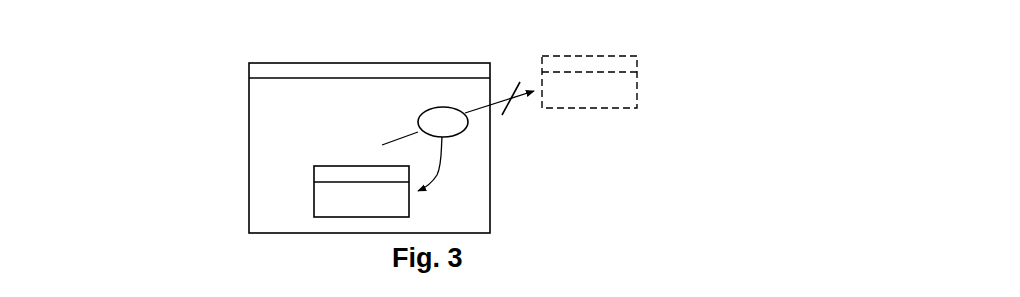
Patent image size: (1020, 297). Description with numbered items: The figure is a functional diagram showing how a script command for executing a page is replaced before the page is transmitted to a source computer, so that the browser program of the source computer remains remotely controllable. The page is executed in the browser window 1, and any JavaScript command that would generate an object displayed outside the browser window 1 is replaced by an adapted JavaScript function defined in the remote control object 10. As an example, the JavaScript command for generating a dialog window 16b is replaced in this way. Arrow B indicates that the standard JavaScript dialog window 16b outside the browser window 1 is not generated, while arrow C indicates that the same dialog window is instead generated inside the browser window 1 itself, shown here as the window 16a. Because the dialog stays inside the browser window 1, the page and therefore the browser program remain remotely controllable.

The remote control object 10 is at (435, 117).
The browser window 1 is at (226, 139).
The first window 16a is at (340, 196).
The dialog window 16b is at (627, 67).
The arrow B is at (495, 102).
The arrow C is at (437, 163).